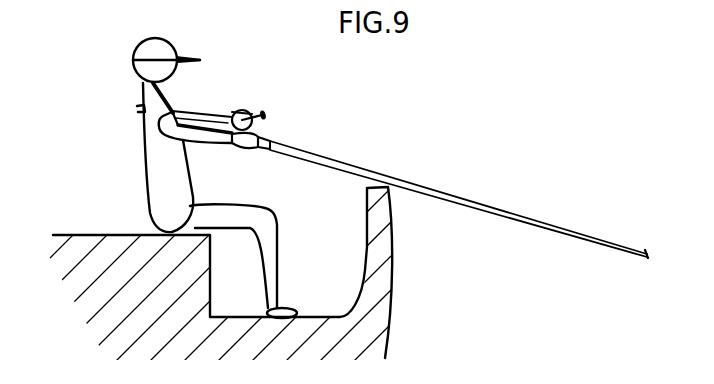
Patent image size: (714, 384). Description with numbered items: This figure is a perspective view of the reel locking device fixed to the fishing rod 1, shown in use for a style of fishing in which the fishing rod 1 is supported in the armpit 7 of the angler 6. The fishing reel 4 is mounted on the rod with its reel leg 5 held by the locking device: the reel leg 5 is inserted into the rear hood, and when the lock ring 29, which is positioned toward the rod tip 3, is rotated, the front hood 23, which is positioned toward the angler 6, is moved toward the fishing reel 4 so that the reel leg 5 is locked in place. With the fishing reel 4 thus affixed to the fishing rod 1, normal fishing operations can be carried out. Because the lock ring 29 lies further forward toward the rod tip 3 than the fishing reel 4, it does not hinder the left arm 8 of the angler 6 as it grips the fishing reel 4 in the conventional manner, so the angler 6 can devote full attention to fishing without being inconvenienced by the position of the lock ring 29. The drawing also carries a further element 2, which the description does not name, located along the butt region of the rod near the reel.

The fishing rod 1 is at (488, 209).
The rod butt 2 is at (194, 114).
The rod tip 3 is at (637, 250).
The fishing reel 4 is at (250, 111).
The reel leg 5 is at (233, 144).
The angler 6 is at (153, 163).
The armpit 7 is at (176, 108).
The left arm 8 is at (216, 116).
The front hood 23 is at (238, 109).
The lock ring 29 is at (268, 139).